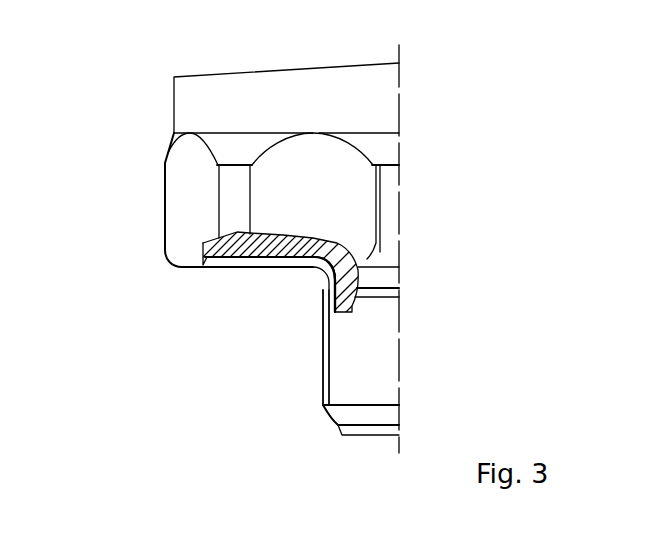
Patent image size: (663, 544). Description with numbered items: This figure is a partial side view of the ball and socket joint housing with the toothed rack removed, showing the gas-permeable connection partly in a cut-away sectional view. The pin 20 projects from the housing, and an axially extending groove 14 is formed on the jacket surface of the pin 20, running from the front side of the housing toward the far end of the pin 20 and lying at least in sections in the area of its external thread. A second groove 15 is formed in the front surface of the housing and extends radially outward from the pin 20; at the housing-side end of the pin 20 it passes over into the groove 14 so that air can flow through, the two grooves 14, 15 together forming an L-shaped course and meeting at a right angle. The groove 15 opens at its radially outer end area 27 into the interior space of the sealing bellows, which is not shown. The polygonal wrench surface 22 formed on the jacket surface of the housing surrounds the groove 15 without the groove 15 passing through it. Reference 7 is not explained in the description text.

The sealing arrangement 7 is at (212, 63).
The polygonal wrench surface 22 is at (185, 210).
The radially outer end area 27 is at (232, 258).
The groove 15 is at (277, 262).
The groove 14 is at (327, 297).
The pin 20 is at (380, 378).